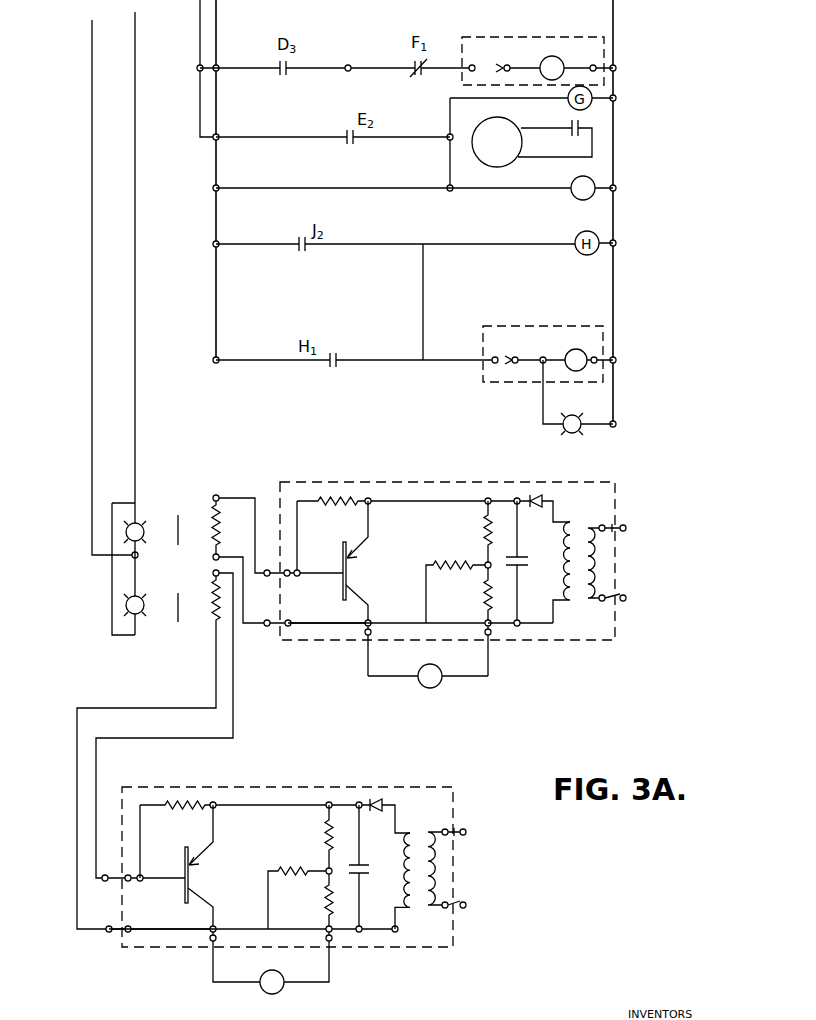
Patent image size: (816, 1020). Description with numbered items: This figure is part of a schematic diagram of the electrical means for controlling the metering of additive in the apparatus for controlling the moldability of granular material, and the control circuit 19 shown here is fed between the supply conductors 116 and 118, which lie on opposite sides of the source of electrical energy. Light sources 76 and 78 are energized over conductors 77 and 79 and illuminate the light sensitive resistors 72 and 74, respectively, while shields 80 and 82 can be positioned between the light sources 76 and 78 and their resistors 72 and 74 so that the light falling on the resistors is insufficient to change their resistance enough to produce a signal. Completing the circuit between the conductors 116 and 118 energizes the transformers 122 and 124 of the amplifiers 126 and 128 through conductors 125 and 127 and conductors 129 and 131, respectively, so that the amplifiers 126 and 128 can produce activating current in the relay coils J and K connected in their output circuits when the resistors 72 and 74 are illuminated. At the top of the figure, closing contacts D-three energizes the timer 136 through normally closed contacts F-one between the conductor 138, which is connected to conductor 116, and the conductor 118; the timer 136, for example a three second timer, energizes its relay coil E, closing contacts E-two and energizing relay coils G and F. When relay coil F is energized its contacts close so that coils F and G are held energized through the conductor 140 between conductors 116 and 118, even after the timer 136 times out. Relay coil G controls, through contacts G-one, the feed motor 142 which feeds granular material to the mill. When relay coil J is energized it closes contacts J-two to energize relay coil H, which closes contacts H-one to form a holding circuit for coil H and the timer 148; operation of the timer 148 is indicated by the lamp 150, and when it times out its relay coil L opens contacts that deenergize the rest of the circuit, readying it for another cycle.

The control circuit 19 is at (628, 266).
The light sensitive resistor 72 is at (218, 520).
The light sensitive resistor 74 is at (214, 600).
The light source 76 is at (148, 524).
The conductor 77 is at (92, 152).
The light source 78 is at (140, 615).
The conductor 79 is at (135, 237).
The shield 80 is at (178, 530).
The shield 82 is at (178, 602).
The conductor 116 is at (236, 36).
The conductor 118 is at (613, 43).
The transformer 122 is at (596, 522).
The transformer 124 is at (434, 832).
The conductor 125 is at (626, 526).
The amplifier 126 is at (494, 482).
The conductor 127 is at (626, 596).
The amplifier 128 is at (364, 787).
The conductor 129 is at (466, 830).
The conductor 131 is at (466, 903).
The timer 136 is at (522, 37).
The conductor 138 is at (199, 50).
The conductor 140 is at (260, 188).
The feed motor 142 is at (484, 162).
The timer 148 is at (508, 326).
The lamp 150 is at (576, 434).